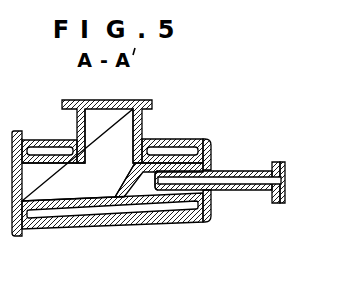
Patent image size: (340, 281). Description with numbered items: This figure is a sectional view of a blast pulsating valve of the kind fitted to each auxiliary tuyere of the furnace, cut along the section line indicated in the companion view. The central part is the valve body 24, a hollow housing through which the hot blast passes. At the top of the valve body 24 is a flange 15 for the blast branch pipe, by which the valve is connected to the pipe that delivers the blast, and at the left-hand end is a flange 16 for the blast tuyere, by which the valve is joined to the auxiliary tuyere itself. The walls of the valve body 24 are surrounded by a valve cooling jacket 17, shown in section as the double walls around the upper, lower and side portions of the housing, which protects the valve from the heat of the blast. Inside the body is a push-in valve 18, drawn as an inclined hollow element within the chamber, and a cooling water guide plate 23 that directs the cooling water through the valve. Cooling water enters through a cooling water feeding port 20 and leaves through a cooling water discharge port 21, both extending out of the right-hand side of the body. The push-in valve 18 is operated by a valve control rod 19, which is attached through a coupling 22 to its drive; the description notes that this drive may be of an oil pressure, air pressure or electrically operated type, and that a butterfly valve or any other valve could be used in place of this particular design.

The flange for the blast branch pipe 15 is at (152, 108).
The flange for the blast tuyere 16 is at (19, 235).
The valve cooling jacket 17 is at (49, 148).
The push-in valve 18 is at (118, 198).
The valve control rod 19 is at (272, 203).
The cooling water feeding port 20 is at (253, 191).
The cooling water discharge port 21 is at (258, 170).
The coupling 22 is at (286, 170).
The cooling water guide plate 23 is at (157, 186).
The valve body 24 is at (93, 188).